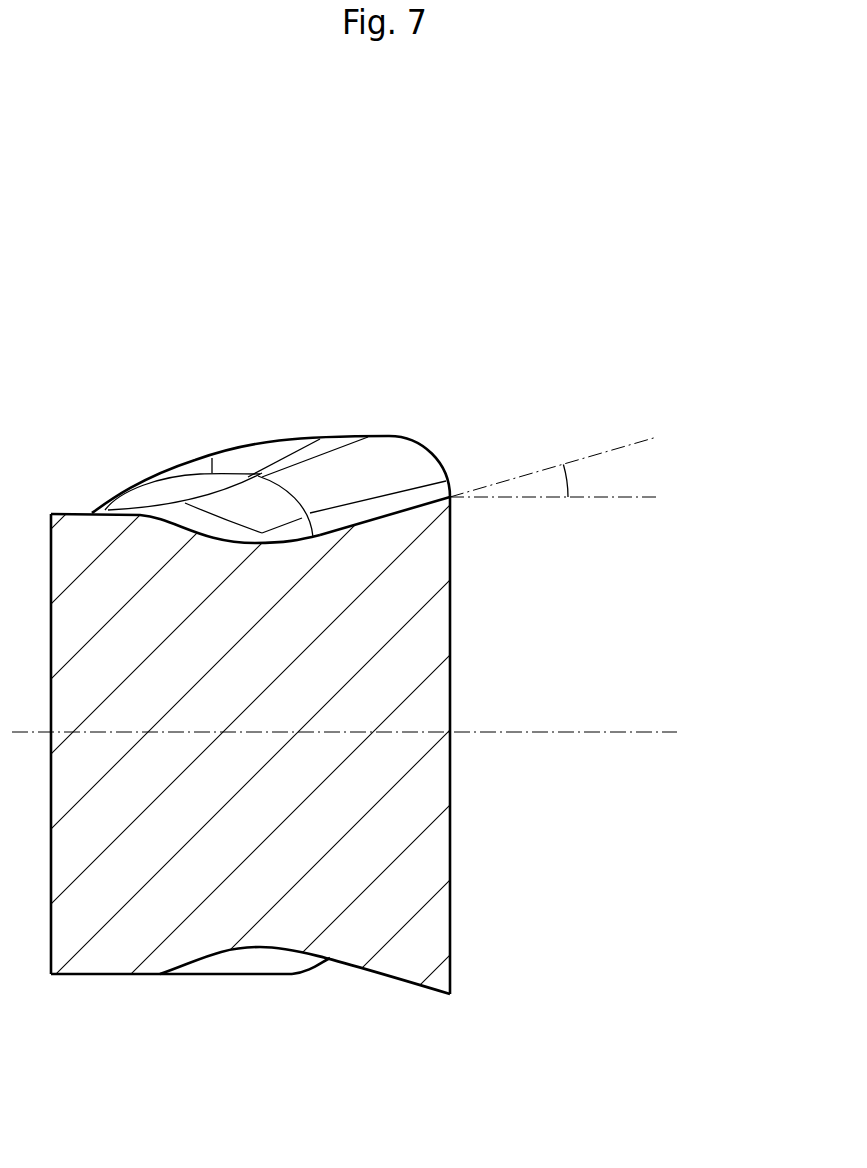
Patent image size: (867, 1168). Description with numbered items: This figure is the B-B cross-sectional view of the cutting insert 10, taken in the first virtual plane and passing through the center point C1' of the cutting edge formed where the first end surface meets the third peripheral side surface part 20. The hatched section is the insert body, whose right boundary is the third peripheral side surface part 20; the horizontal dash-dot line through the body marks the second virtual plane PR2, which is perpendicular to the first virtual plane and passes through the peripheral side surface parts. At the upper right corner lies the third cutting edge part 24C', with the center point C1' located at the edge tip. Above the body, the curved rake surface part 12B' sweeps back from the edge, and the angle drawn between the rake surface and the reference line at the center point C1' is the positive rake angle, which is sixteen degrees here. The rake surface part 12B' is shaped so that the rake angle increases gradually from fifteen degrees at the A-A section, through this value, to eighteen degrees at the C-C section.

The cutting insert 10 is at (430, 656).
The third peripheral side surface part 20 is at (453, 858).
The rake surface part 12B' is at (269, 417).
The third cutting edge part 24C' is at (462, 438).
The center point C1' is at (444, 537).
The second virtual plane PR2 is at (372, 691).